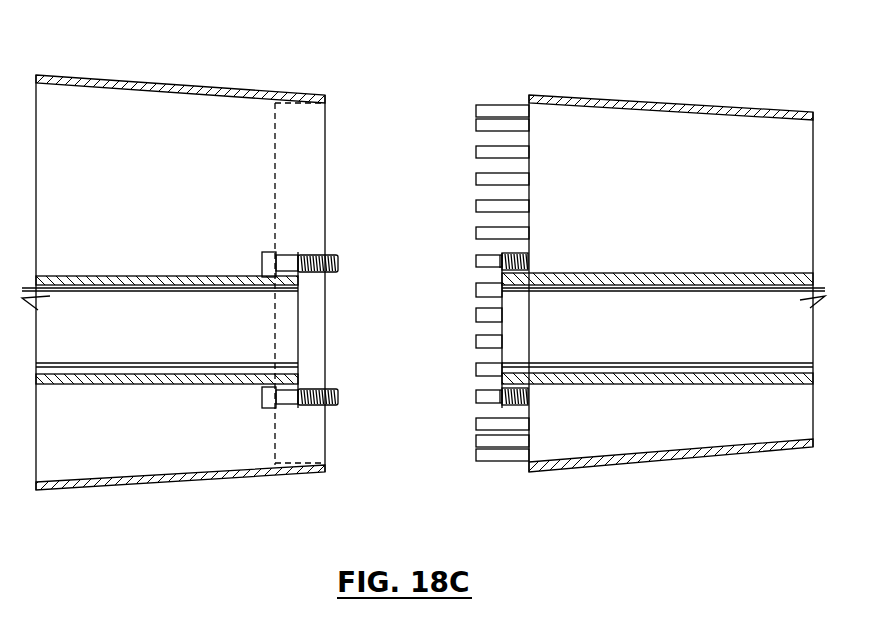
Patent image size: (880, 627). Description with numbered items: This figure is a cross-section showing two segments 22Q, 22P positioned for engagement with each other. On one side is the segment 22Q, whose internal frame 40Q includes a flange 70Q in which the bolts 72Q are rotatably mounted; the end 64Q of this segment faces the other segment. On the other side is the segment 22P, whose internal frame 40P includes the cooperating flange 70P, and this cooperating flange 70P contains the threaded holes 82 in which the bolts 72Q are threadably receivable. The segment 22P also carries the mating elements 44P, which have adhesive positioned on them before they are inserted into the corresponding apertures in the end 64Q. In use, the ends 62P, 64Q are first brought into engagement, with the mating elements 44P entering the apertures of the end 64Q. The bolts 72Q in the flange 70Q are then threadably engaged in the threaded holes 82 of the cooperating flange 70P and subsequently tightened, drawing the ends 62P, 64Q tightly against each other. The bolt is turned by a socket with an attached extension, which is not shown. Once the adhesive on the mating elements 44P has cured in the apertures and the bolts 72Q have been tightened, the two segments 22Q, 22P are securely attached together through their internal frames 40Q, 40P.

The segment 22Q is at (176, 70).
The internal frame 40Q is at (137, 275).
The flange 70Q is at (285, 252).
The bolts 72Q is at (316, 271).
The end 64Q is at (275, 445).
The segment 22P is at (700, 94).
The internal frame 40P is at (734, 268).
The end 62P is at (530, 138).
The mating elements 44P is at (483, 155).
The cooperating flange 70P is at (520, 252).
The threaded holes 82 is at (500, 262).